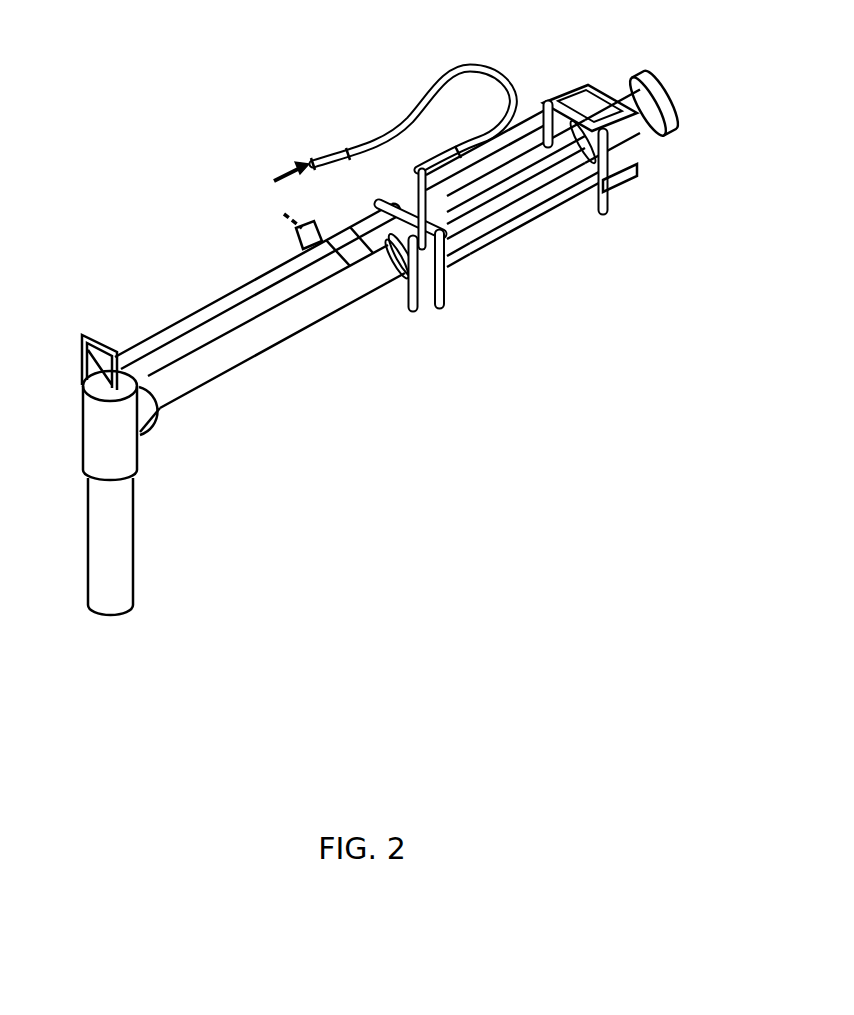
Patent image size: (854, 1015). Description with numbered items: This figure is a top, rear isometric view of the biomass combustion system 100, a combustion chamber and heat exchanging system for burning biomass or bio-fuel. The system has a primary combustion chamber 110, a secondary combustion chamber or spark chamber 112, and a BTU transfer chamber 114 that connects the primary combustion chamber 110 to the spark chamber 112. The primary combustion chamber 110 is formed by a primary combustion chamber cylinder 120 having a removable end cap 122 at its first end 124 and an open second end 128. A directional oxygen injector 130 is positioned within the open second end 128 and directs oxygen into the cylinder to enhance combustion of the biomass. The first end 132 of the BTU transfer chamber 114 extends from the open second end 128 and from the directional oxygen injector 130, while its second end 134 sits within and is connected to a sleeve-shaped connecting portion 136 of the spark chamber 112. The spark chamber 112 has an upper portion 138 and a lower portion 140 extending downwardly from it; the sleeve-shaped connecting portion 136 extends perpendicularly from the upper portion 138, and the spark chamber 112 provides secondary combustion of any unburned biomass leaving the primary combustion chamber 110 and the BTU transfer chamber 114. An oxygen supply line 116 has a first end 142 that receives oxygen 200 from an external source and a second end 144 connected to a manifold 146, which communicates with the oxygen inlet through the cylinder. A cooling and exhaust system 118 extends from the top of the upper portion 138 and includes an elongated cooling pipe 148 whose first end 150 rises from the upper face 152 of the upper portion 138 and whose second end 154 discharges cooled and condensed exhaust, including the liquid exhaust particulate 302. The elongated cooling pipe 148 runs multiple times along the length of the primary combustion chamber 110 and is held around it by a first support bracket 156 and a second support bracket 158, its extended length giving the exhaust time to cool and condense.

The biomass combustion system 100 is at (133, 211).
The primary combustion chamber 110 is at (503, 220).
The spark chamber 112 is at (122, 496).
The BTU transfer chamber 114 is at (283, 337).
The oxygen supply line 116 is at (424, 82).
The cooling and exhaust system 118 is at (157, 333).
The primary combustion chamber cylinder 120 is at (473, 242).
The removable end cap 122 is at (667, 82).
The first end 124 is at (655, 128).
The open second end 128 is at (450, 263).
The directional oxygen injector 130 is at (375, 212).
The first end 132 is at (390, 265).
The second end 134 is at (172, 395).
The sleeve-shaped connecting portion 136 is at (152, 415).
The upper portion 138 is at (93, 433).
The lower portion 140 is at (98, 573).
The first end 142 is at (320, 158).
The second end 144 is at (462, 150).
The manifold 146 is at (418, 177).
The elongated cooling pipe 148 is at (193, 315).
The first end 150 is at (110, 383).
The upper face 152 is at (88, 393).
The second end 154 is at (298, 240).
The first support bracket 156 is at (570, 212).
The second support bracket 158 is at (440, 305).
The oxygen 200 is at (280, 173).
The liquid exhaust particulate 302 is at (280, 211).